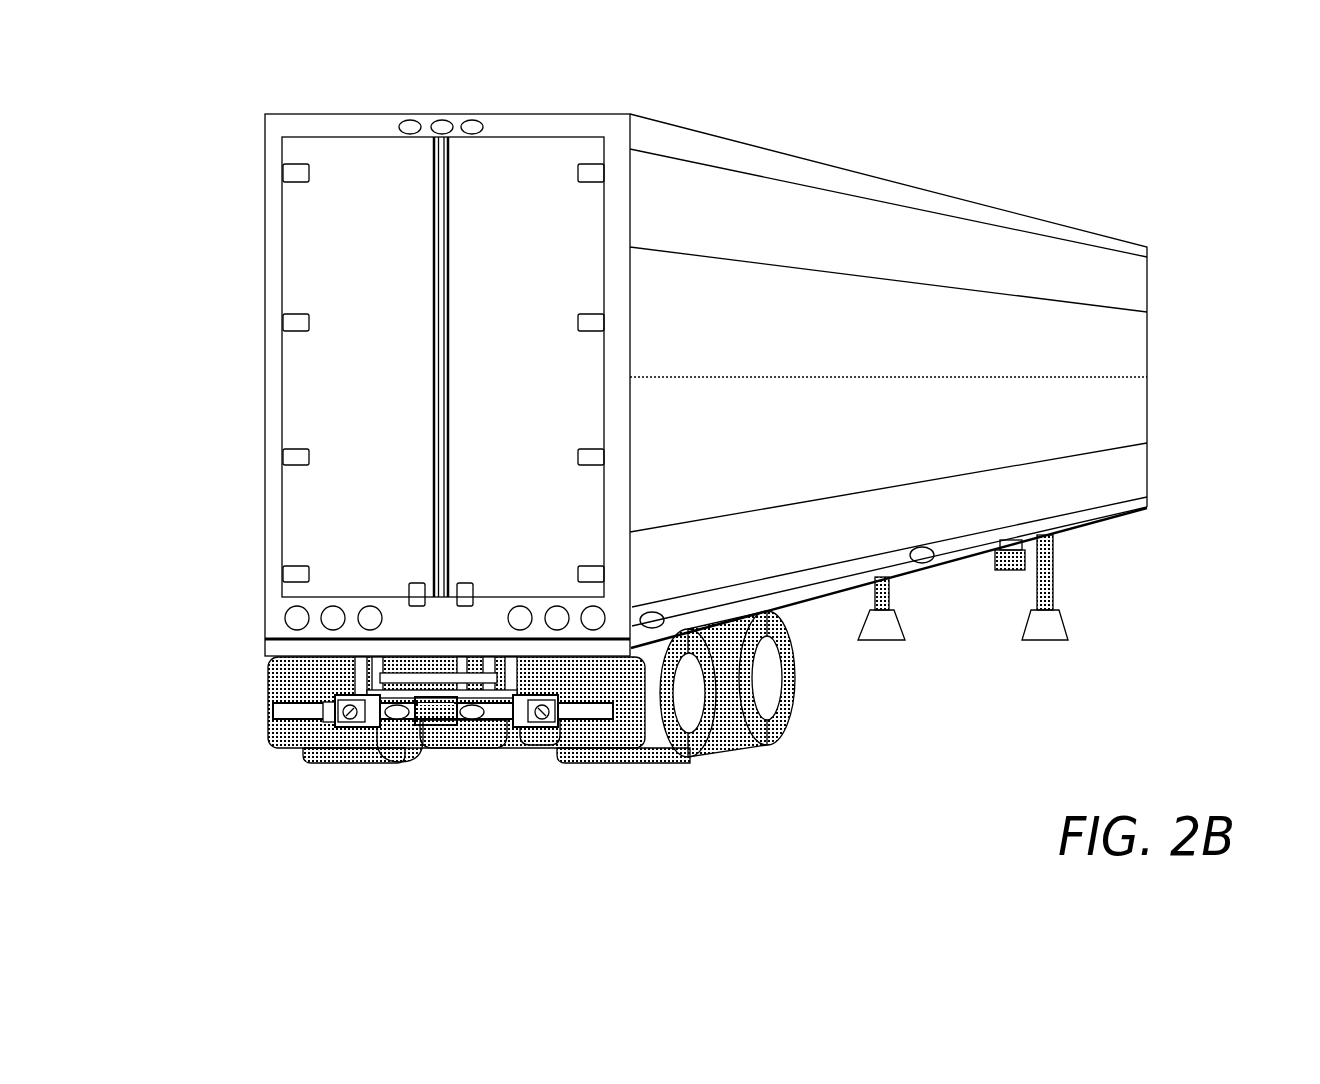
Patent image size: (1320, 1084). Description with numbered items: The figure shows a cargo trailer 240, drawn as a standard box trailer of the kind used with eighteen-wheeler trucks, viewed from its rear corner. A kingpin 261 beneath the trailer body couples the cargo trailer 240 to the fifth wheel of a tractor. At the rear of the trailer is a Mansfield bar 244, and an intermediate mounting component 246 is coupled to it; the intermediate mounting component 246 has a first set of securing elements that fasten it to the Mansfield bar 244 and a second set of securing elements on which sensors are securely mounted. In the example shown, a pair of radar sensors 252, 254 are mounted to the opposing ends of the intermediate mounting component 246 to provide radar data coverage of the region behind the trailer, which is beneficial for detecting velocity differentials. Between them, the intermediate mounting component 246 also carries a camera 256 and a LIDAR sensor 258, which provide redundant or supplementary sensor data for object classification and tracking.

The cargo trailer 240 is at (843, 456).
The Mansfield bar 244 is at (262, 710).
The intermediate mounting component 246 is at (443, 773).
The radar sensor 252 is at (541, 754).
The radar sensor 254 is at (350, 727).
The camera 256 is at (474, 720).
The LIDAR sensor 258 is at (430, 725).
The kingpin 261 is at (1009, 558).